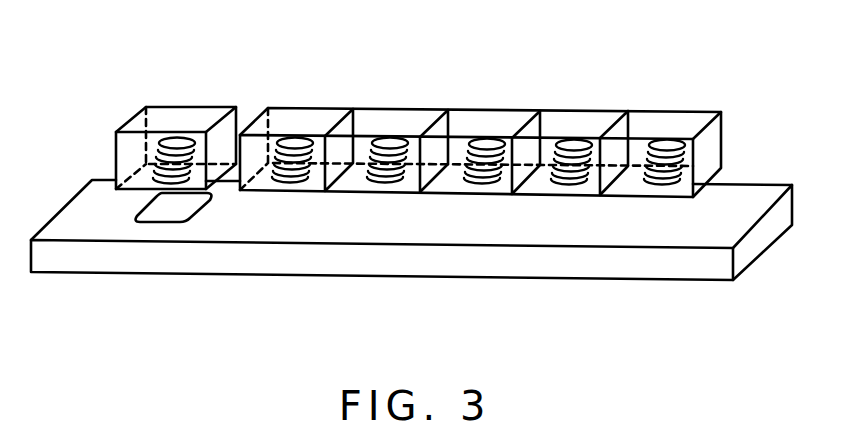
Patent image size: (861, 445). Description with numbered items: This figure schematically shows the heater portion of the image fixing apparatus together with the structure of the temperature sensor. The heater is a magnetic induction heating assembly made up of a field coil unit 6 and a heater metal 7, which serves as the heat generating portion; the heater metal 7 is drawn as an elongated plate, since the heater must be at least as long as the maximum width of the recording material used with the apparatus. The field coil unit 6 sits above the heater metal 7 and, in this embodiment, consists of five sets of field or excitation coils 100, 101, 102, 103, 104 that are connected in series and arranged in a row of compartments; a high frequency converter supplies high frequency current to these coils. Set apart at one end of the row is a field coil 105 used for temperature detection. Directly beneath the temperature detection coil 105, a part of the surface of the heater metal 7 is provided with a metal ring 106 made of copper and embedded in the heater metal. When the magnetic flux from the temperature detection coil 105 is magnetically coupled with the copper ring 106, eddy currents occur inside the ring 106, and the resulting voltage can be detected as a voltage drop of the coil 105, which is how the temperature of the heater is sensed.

The field coil unit 6 is at (444, 98).
The heater metal 7 is at (565, 277).
The field coil 100 is at (309, 107).
The field coil 101 is at (397, 108).
The field coil 102 is at (493, 109).
The field coil 103 is at (582, 110).
The field coil 104 is at (669, 115).
The field coil for temperature detection 105 is at (197, 106).
The metal ring 106 is at (167, 222).